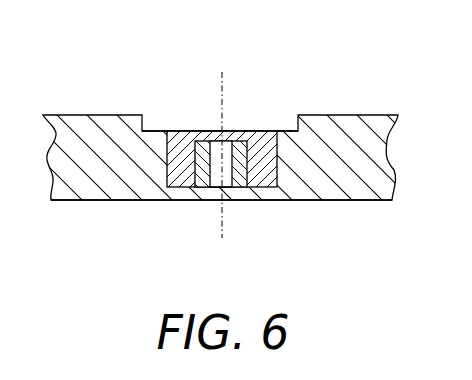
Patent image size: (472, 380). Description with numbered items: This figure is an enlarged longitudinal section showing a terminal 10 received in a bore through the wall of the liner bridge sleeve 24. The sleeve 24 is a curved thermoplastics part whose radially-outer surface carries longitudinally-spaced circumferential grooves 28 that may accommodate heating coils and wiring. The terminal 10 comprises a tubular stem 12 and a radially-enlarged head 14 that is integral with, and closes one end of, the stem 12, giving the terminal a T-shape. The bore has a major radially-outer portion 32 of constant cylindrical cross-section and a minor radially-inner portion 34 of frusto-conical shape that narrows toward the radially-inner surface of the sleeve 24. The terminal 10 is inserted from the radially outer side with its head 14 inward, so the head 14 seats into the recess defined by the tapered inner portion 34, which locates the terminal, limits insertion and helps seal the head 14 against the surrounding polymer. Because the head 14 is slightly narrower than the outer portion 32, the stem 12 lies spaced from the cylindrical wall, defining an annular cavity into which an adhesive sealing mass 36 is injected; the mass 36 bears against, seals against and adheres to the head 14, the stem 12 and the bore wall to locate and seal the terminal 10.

The sleeve 24 is at (355, 75).
The circumferential grooves 28 is at (286, 130).
The radially-outer portion 32 is at (156, 130).
The adhesive sealing mass 36 is at (182, 130).
The tubular stem 12 is at (229, 130).
The radially-enlarged head 14 is at (203, 200).
The radially-inner portion 34 is at (275, 200).
The terminal 10 is at (247, 234).